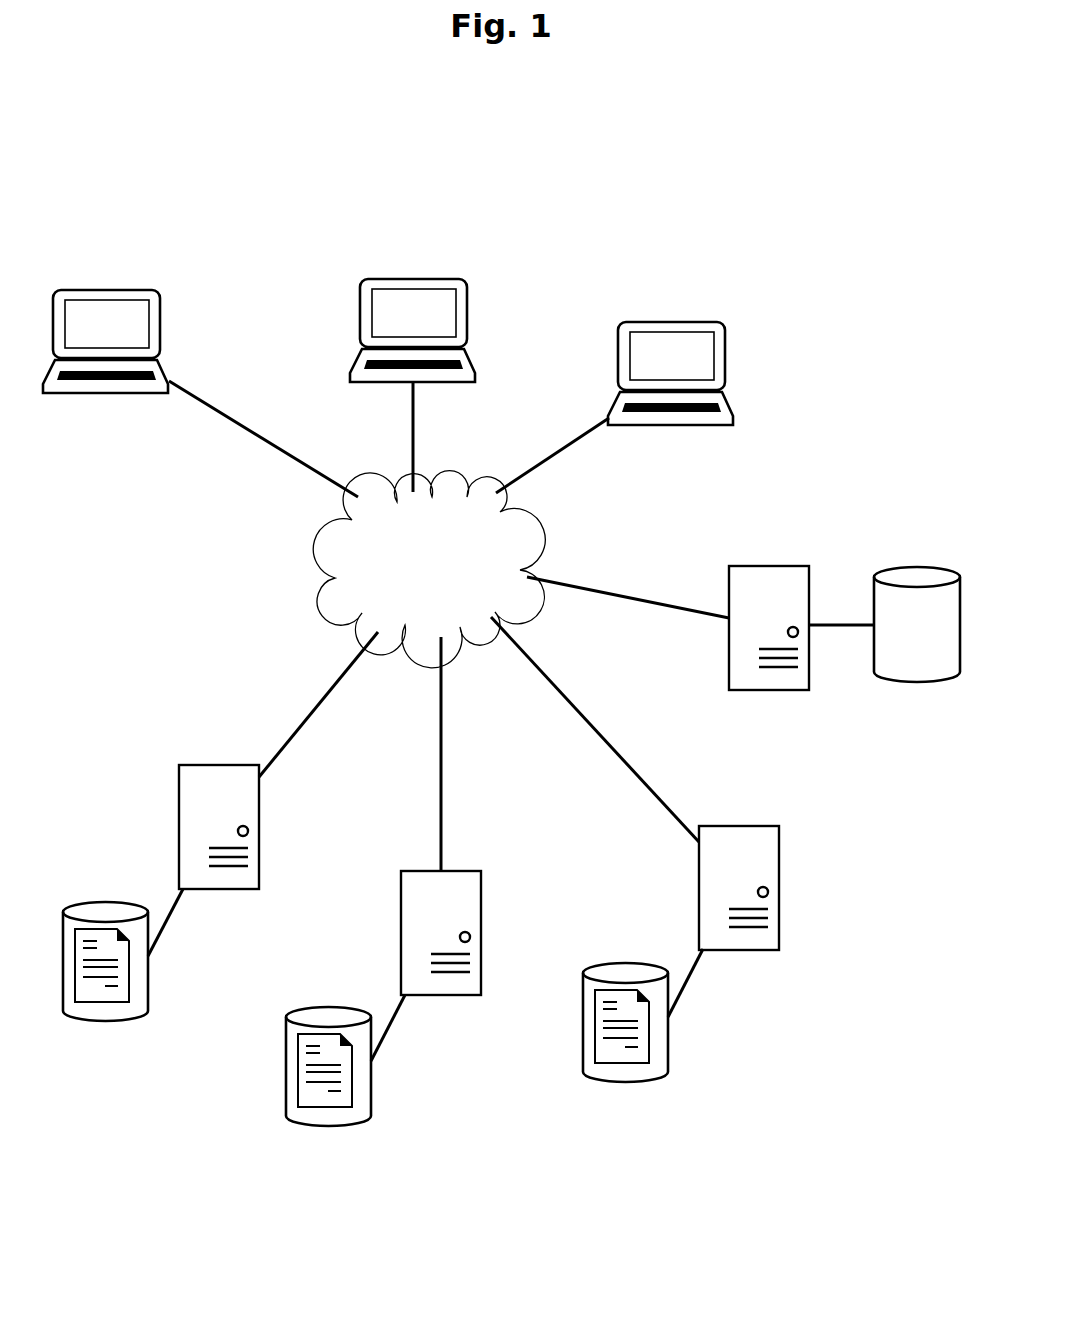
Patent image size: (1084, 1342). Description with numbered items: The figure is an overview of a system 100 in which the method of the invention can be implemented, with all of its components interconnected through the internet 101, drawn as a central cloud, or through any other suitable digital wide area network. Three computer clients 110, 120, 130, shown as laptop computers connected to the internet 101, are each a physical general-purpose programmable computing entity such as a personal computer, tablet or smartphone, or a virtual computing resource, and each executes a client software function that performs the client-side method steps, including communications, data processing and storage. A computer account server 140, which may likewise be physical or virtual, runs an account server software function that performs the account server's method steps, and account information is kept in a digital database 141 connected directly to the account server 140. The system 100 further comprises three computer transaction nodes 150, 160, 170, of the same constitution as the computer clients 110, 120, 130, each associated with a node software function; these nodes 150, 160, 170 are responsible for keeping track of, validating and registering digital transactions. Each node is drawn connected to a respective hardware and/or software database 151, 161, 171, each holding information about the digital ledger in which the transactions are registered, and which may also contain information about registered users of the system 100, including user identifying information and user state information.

The system 100 is at (274, 188).
The internet 101 is at (429, 569).
The computer client 110 is at (105, 341).
The computer client 120 is at (412, 330).
The computer client 130 is at (670, 373).
The computer account server 140 is at (769, 628).
The digital database 141 is at (917, 624).
The computer transaction node 150 is at (219, 827).
The database 151 is at (105, 1020).
The computer transaction node 160 is at (441, 933).
The database 161 is at (328, 1124).
The computer transaction node 170 is at (739, 888).
The database 171 is at (626, 1078).